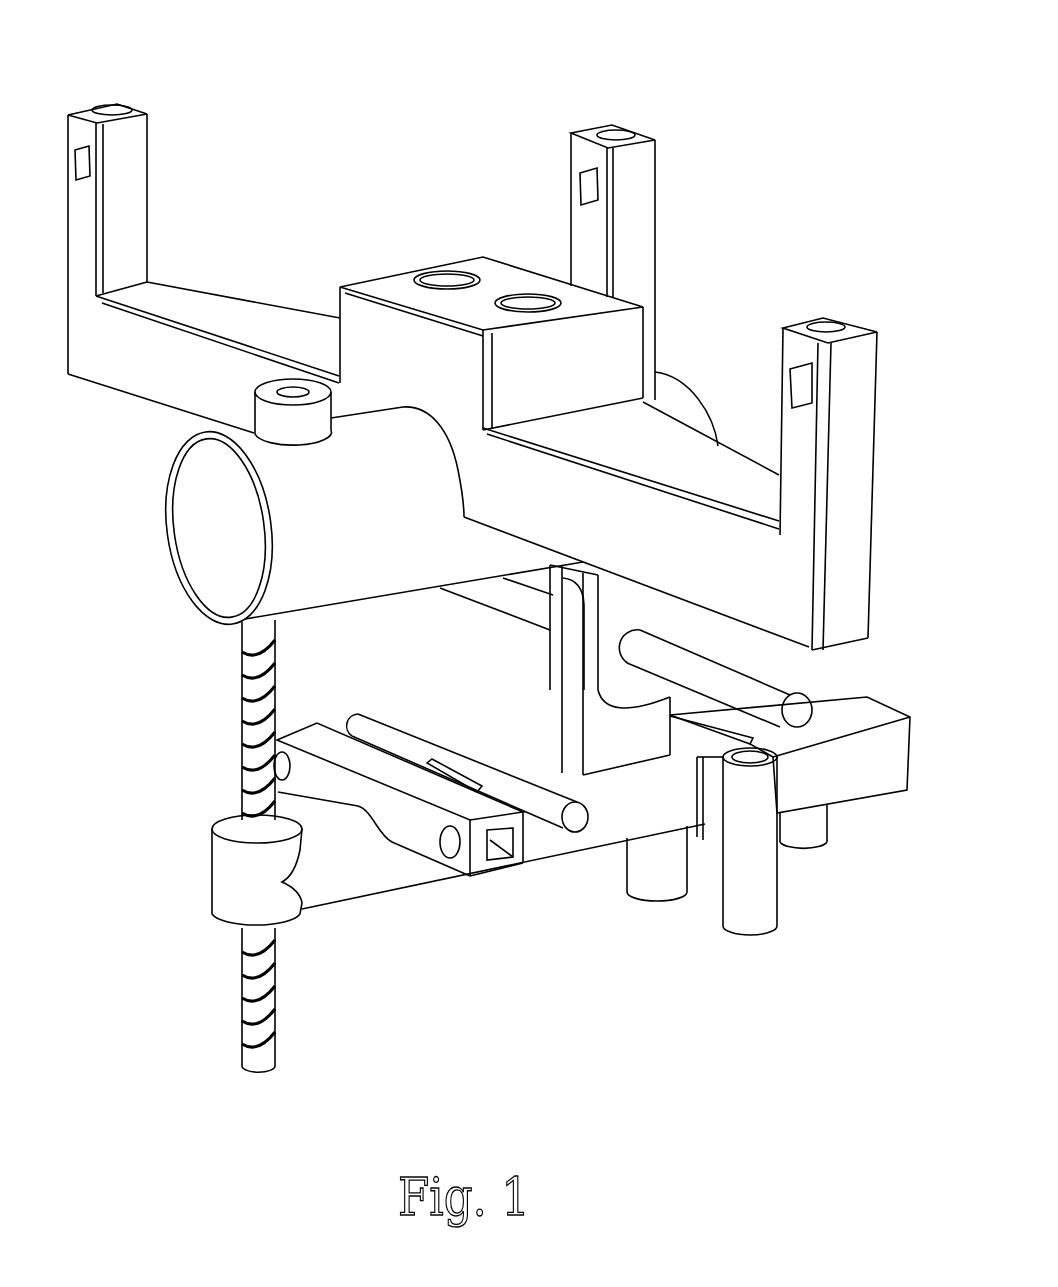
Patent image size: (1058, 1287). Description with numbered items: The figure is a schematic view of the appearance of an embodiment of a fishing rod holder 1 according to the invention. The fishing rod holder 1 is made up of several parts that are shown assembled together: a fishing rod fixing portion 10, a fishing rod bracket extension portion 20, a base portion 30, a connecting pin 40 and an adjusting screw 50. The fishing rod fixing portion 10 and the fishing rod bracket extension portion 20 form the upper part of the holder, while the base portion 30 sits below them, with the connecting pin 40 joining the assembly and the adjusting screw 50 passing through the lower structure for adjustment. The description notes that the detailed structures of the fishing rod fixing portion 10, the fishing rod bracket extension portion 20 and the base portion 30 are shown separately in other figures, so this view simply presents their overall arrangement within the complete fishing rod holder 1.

The fishing rod holder 1 is at (501, 549).
The fishing rod fixing portion 10 is at (167, 566).
The fishing rod bracket extension portion 20 is at (379, 270).
The base portion 30 is at (579, 855).
The connecting pin 40 is at (795, 687).
The adjusting screw 50 is at (223, 967).